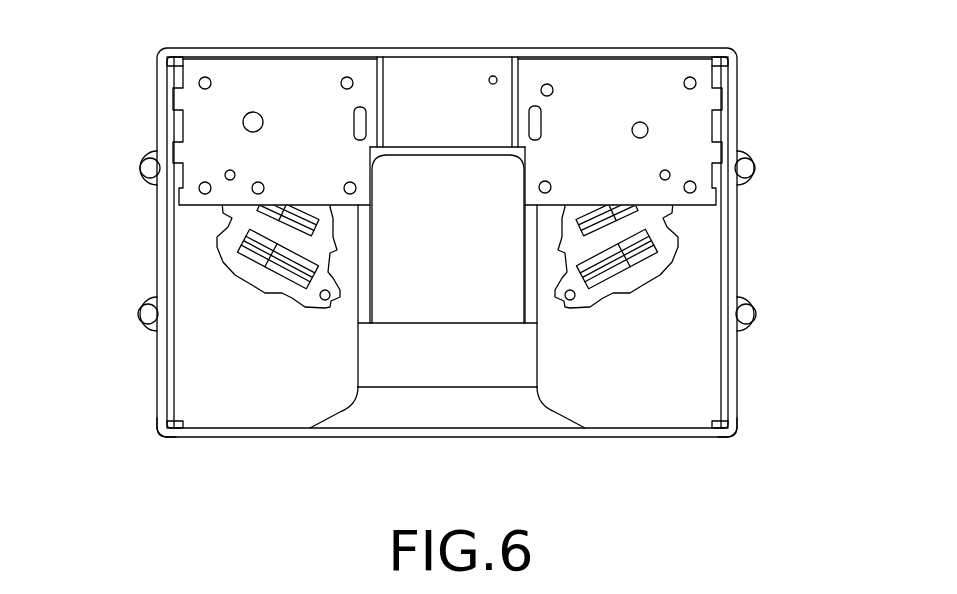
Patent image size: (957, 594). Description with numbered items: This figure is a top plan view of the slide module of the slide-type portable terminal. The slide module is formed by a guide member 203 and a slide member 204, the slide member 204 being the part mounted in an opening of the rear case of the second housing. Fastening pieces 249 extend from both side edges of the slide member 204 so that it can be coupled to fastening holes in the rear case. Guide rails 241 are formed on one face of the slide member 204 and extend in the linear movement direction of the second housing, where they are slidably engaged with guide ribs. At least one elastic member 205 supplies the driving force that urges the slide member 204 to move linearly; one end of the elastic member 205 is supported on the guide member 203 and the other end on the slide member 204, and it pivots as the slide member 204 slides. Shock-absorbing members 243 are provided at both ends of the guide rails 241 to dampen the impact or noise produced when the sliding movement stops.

The guide member 203 is at (702, 128).
The slide member 204 is at (752, 278).
The elastic member 205 is at (212, 240).
The guide rails 241 is at (173, 366).
The shock-absorbing members 243 is at (157, 430).
The fastening pieces 249 is at (133, 167).